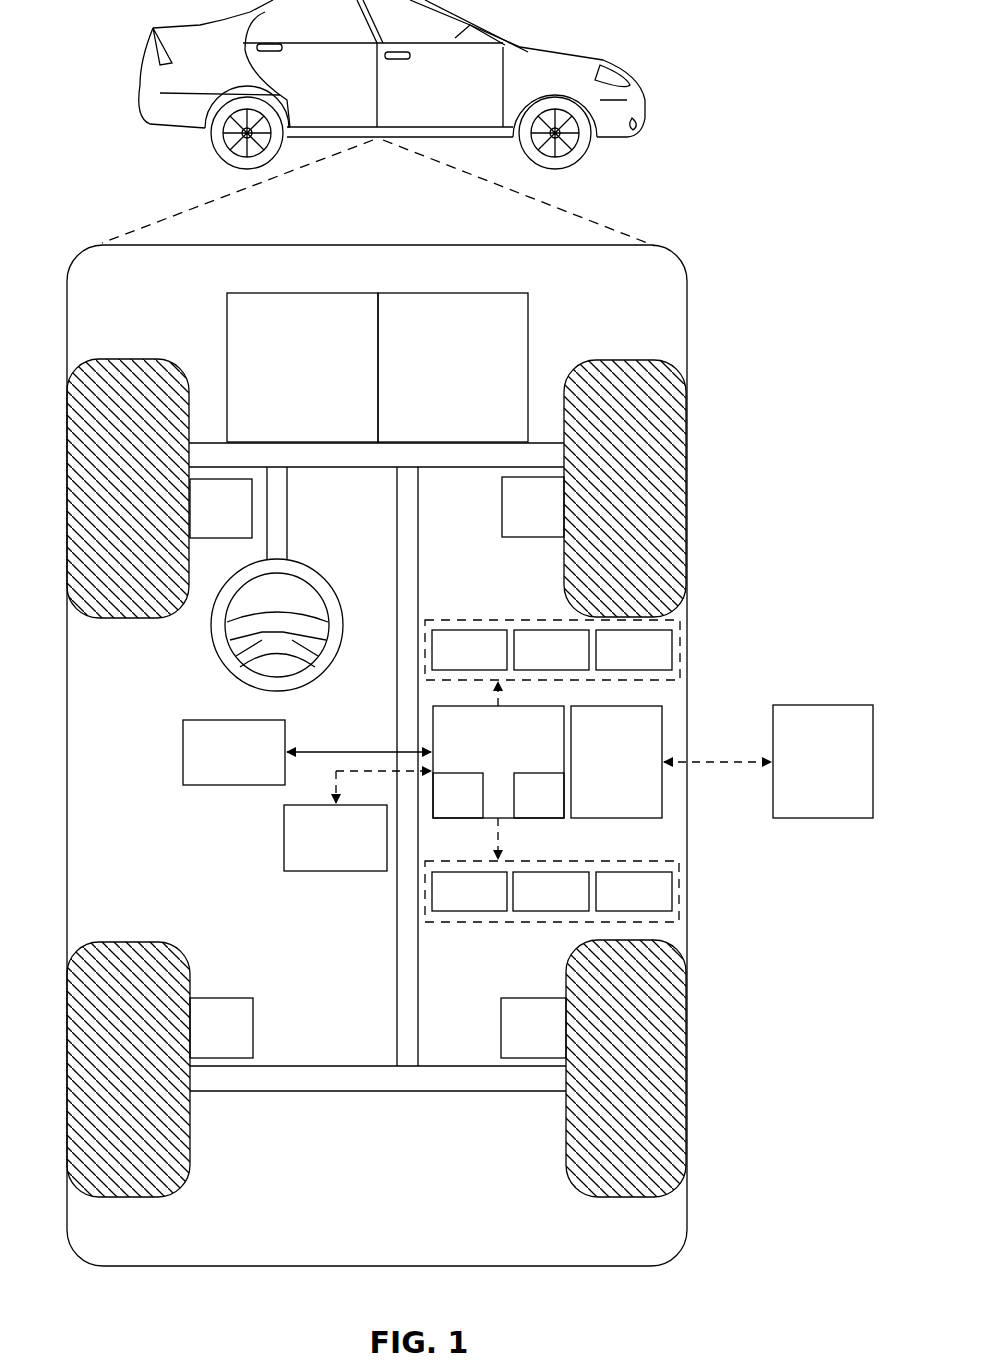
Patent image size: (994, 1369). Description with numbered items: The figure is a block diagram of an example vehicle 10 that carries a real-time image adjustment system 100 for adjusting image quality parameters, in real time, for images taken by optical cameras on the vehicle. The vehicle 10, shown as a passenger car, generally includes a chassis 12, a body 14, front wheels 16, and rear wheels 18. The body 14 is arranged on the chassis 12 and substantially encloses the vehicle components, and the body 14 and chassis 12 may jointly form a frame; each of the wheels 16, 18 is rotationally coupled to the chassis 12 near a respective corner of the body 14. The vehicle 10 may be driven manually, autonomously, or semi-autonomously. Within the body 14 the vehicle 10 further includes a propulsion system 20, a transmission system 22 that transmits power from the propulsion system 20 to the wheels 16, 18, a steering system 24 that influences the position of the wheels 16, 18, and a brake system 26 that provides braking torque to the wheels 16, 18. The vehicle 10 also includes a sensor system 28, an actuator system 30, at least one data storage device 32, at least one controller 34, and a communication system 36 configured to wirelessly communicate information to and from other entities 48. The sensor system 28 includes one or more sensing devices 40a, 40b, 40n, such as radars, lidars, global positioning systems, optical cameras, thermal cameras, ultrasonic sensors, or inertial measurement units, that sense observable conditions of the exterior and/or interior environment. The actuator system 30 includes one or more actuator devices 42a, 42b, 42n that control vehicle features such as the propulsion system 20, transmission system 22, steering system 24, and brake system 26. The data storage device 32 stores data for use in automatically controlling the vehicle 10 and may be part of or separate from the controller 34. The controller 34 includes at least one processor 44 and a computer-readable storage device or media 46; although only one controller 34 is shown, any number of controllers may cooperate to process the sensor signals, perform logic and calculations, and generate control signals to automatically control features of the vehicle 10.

The vehicle 10 is at (148, 62).
The chassis 12 is at (397, 907).
The body 14 is at (67, 717).
The front wheels 16 is at (128, 359).
The rear wheels 18 is at (128, 1197).
The propulsion system 20 is at (289, 382).
The transmission system 22 is at (439, 382).
The steering system 24 is at (300, 532).
The brake system 26 is at (207, 523).
The sensor system 28 is at (511, 620).
The actuator system 30 is at (515, 922).
The data storage device 32 is at (321, 853).
The controller 34 is at (484, 758).
The communication system 36 is at (602, 777).
The sensing device 40a is at (449, 665).
The sensing device 40b is at (531, 665).
The sensing device 40n is at (614, 665).
The actuator device 42a is at (449, 906).
The actuator device 42b is at (531, 906).
The actuator device 42n is at (614, 906).
The processor 44 is at (444, 811).
The computer-readable storage device or media 46 is at (525, 811).
The other entities 48 is at (809, 777).
The real-time image adjustment system 100 is at (213, 767).